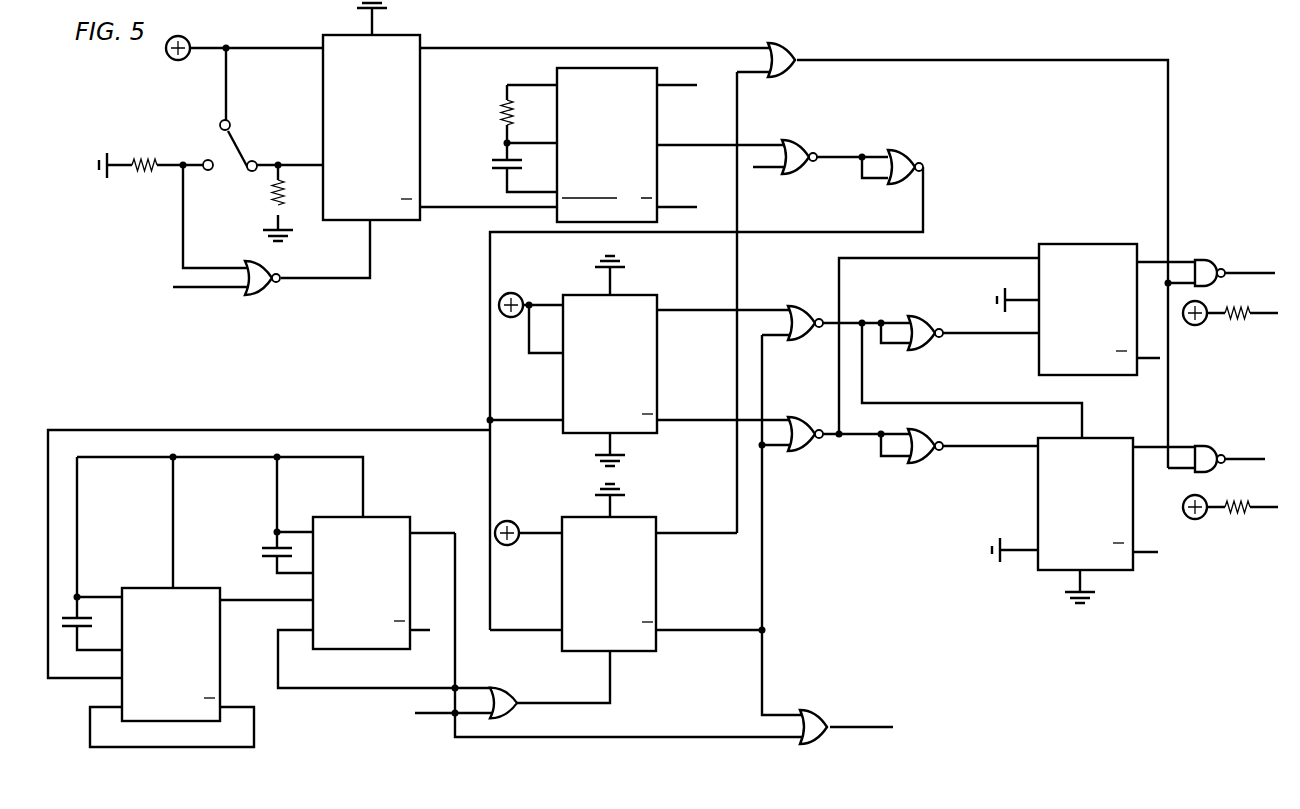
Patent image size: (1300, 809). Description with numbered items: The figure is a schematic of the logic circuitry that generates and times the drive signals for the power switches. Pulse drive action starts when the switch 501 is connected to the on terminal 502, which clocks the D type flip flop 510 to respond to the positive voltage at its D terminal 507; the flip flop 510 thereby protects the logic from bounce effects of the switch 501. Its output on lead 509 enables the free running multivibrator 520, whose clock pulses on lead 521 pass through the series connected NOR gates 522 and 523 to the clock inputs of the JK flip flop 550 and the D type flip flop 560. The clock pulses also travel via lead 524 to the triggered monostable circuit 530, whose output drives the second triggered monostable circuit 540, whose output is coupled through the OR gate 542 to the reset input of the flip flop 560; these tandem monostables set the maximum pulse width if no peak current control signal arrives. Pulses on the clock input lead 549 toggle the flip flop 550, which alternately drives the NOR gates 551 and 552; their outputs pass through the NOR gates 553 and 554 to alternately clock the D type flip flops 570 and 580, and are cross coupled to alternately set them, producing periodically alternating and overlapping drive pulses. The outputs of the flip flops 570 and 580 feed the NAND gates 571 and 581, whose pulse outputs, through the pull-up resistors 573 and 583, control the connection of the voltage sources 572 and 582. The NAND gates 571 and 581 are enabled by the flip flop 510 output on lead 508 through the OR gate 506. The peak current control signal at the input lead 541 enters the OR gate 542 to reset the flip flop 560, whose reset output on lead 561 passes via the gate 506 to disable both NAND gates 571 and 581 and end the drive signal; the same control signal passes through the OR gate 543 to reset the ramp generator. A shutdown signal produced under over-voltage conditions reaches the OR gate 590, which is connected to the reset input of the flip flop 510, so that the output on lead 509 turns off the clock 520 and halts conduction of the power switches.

The switch 501 is at (233, 139).
The on terminal 502 is at (254, 167).
The OR gate 506 is at (794, 52).
The D terminal 507 is at (258, 46).
The lead 508 is at (445, 46).
The lead 509 is at (441, 205).
The D type flip flop 510 is at (398, 30).
The free running multivibrator 520 is at (657, 171).
The lead 521 is at (676, 144).
The NOR gate 522 is at (793, 143).
The NOR gate 523 is at (898, 161).
The lead 524 is at (398, 426).
The triggered monostable circuit 530 is at (196, 588).
The second triggered monostable circuit 540 is at (386, 517).
The input lead 541 is at (428, 728).
The OR gate 542 is at (513, 696).
The OR gate 543 is at (815, 716).
The clock input lead 549 is at (510, 420).
The JK flip flop 550 is at (657, 358).
The NOR gate 551 is at (802, 309).
The NOR gate 552 is at (802, 419).
The NOR gate 553 is at (923, 328).
The NOR gate 554 is at (923, 431).
The D type flip flop 560 is at (660, 588).
The lead 561 is at (676, 529).
The D type flip flop 570 is at (1074, 244).
The NAND gate 571 is at (1215, 258).
The voltage source 572 is at (1192, 325).
The pull-up resistor 573 is at (1236, 309).
The D type flip flop 580 is at (1099, 438).
The NAND gate 581 is at (1213, 446).
The voltage source 582 is at (1192, 519).
The pull-up resistor 583 is at (1228, 499).
The OR gate 590 is at (263, 273).